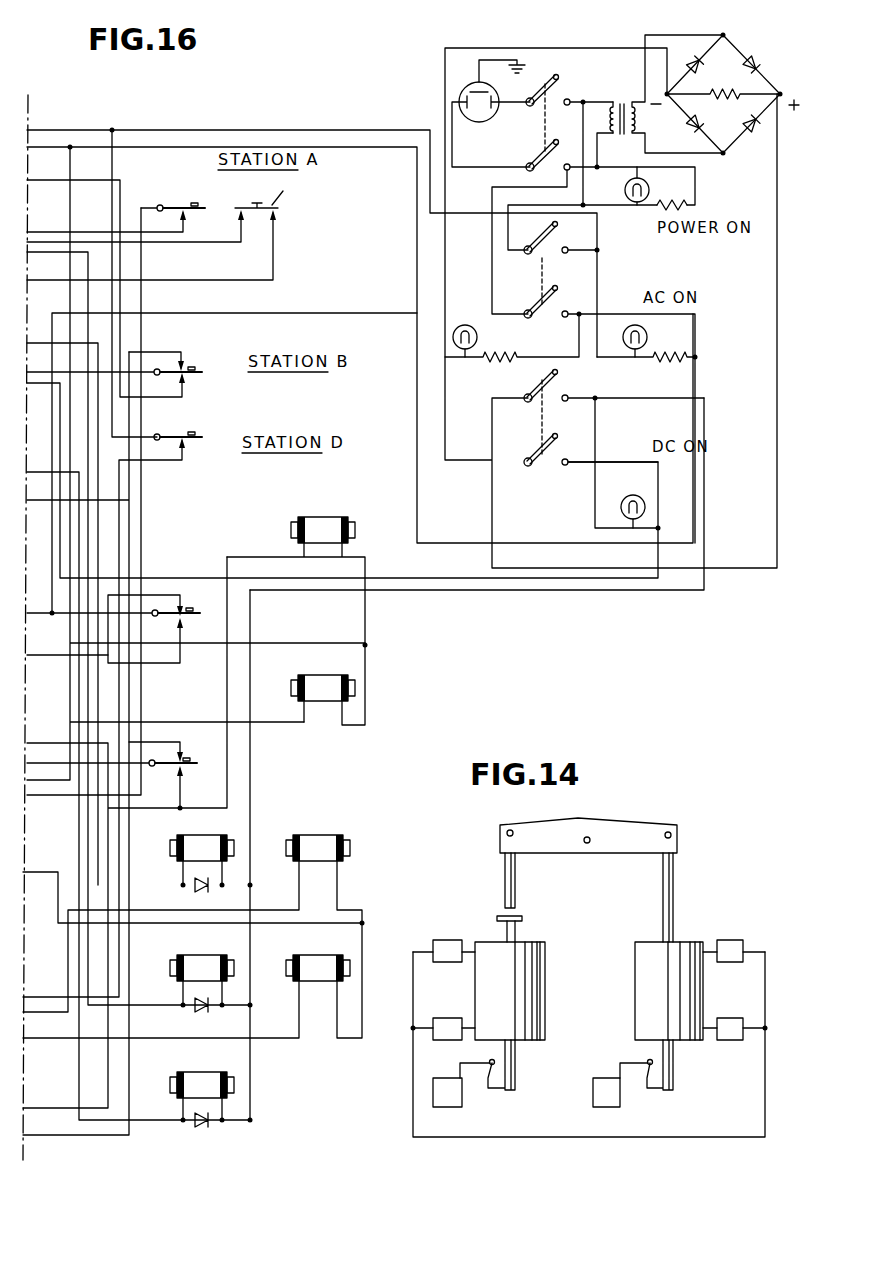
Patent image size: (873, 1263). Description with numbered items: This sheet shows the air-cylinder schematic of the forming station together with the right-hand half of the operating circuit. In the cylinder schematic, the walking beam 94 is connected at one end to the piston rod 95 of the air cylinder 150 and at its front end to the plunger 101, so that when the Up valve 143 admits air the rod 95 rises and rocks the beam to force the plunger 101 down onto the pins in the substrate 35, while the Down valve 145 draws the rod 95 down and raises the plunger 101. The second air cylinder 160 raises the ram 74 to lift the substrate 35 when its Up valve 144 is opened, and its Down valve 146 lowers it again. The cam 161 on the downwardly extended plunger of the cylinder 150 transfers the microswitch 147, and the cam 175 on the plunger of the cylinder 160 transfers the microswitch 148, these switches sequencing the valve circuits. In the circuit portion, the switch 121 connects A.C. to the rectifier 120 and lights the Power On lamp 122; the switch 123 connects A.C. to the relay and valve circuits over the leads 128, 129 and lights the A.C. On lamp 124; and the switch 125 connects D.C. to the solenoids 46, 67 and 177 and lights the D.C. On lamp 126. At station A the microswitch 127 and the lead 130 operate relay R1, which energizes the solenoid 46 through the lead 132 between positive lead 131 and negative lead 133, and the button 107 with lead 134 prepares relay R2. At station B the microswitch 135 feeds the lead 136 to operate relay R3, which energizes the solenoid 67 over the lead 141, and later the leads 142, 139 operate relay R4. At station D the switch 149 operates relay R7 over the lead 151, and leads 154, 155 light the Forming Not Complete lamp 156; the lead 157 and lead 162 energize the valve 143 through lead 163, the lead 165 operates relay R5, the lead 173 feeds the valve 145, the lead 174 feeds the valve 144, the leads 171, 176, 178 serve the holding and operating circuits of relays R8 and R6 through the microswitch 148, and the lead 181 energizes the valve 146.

In FIG. 16, the A.C. lead 129 is at (76, 131).
In FIG. 16, the lead 136 is at (119, 179).
In FIG. 16, the A.C. lead 128 is at (74, 213).
In FIG. 16, the microswitch 127 is at (181, 206).
In FIG. 16, the switch 107 is at (173, 227).
In FIG. 16, the lead 130 is at (143, 265).
In FIG. 16, the lead 134 is at (272, 260).
In FIG. 16, the lead 142 is at (37, 370).
In FIG. 16, the lead 155 is at (352, 316).
In FIG. 16, the microswitch 135 is at (183, 368).
In FIG. 16, the switch 149 is at (170, 434).
In FIG. 16, the lead 139 is at (130, 492).
In FIG. 16, the lead 151 is at (119, 555).
In FIG. 16, the lead 157 is at (150, 594).
In FIG. 16, the microswitch 147 is at (180, 614).
In FIG. 14, the microswitch 147 is at (608, 1108).
In FIG. 16, the lead 154 is at (33, 616).
In FIG. 16, the lead 165 is at (150, 663).
In FIG. 16, the lead 176 is at (40, 762).
In FIG. 16, the lead 173 is at (158, 724).
In FIG. 16, the microswitch 148 is at (181, 762).
In FIG. 14, the microswitch 148 is at (455, 1108).
In FIG. 16, the lead 178 is at (104, 866).
In FIG. 16, the solenoid 177 is at (193, 840).
In FIG. 16, the Up valve 143 is at (320, 840).
In FIG. 14, the Up valve 143 is at (735, 1018).
In FIG. 16, the lead 162 is at (300, 890).
In FIG. 16, the lead 163 is at (172, 922).
In FIG. 16, the solenoid 46 is at (198, 960).
In FIG. 16, the Up valve 144 is at (312, 962).
In FIG. 14, the Up valve 144 is at (450, 1018).
In FIG. 16, the lead 132 is at (150, 1006).
In FIG. 16, the lead 174 is at (270, 1040).
In FIG. 16, the lead 171 is at (124, 1075).
In FIG. 16, the solenoid 67 is at (196, 1078).
In FIG. 16, the lead 141 is at (143, 1120).
In FIG. 16, the lead 181 is at (260, 557).
In FIG. 16, the Down valve 146 is at (326, 517).
In FIG. 14, the Down valve 146 is at (440, 940).
In FIG. 16, the Down valve 145 is at (326, 678).
In FIG. 14, the Down valve 145 is at (735, 940).
In FIG. 16, the lead 133 is at (535, 49).
In FIG. 16, the lead 131 is at (778, 244).
In FIG. 16, the switch 121 is at (541, 124).
In FIG. 16, the Power On lamp 122 is at (650, 190).
In FIG. 16, the rectifier 120 is at (749, 146).
In FIG. 16, the switch 123 is at (541, 262).
In FIG. 16, the lamp 156 is at (478, 338).
In FIG. 16, the A.C. On lamp 124 is at (648, 338).
In FIG. 16, the switch 125 is at (541, 418).
In FIG. 16, the D.C. On lamp 126 is at (633, 495).
In FIG. 14, the walking beam 94 is at (632, 822).
In FIG. 14, the plunger 101 is at (503, 870).
In FIG. 14, the piston rod 95 is at (672, 878).
In FIG. 14, the substrate 35 is at (523, 916).
In FIG. 14, the ram 74 is at (518, 928).
In FIG. 14, the air cylinder 160 is at (540, 983).
In FIG. 14, the air cylinder 150 is at (638, 990).
In FIG. 14, the cam 175 is at (497, 1088).
In FIG. 14, the cam 161 is at (653, 1088).